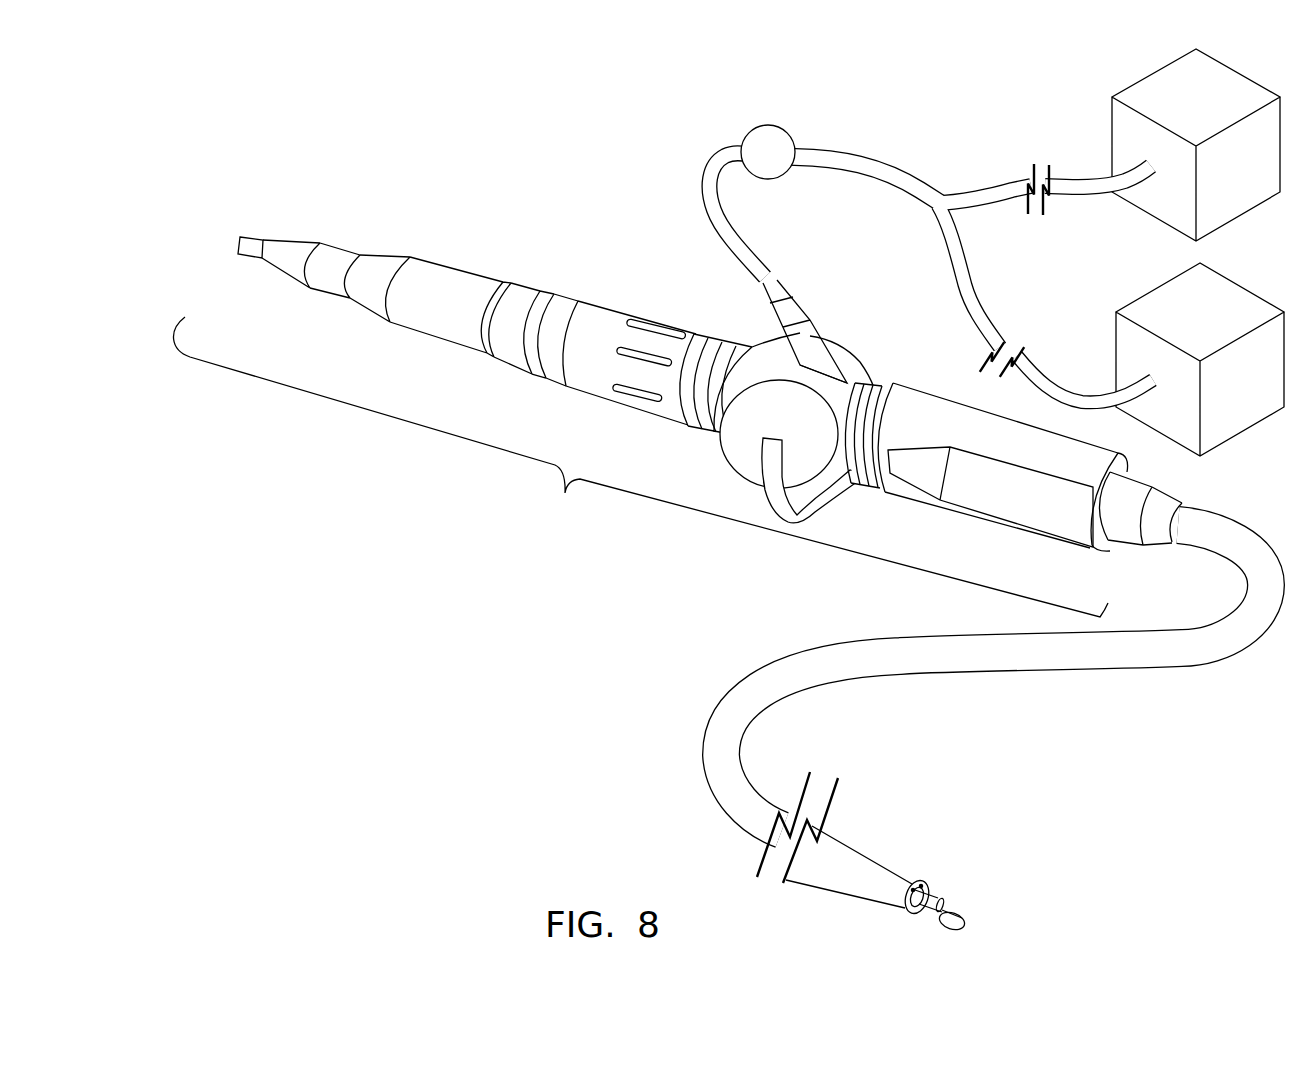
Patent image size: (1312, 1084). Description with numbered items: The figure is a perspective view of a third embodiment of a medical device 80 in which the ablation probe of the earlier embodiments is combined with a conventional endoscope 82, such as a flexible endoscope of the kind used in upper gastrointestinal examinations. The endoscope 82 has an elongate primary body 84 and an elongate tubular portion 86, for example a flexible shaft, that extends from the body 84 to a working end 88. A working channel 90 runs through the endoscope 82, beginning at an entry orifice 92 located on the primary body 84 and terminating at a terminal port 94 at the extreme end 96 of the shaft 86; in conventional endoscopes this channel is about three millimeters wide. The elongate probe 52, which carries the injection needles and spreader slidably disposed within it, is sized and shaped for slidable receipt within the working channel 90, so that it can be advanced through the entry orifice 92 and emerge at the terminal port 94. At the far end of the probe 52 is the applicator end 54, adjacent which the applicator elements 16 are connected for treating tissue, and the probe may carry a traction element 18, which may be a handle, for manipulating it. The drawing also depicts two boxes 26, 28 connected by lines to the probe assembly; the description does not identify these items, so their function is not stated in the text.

The medical device 80 is at (541, 122).
The endoscope 82 is at (558, 240).
The elongate primary body 84 is at (641, 467).
The elongate tubular portion 86 is at (705, 752).
The working end 88 is at (893, 880).
The working channel 90 is at (918, 911).
The entry orifice 92 is at (782, 289).
The terminal port 94 is at (900, 897).
The extreme end 96 is at (913, 882).
The elongate probe 52 is at (725, 155).
The applicator end 54 is at (962, 930).
The applicator elements 16 is at (962, 903).
The traction element 18 is at (776, 168).
The fluid source 26 is at (1203, 106).
The aspiration source 28 is at (1218, 330).